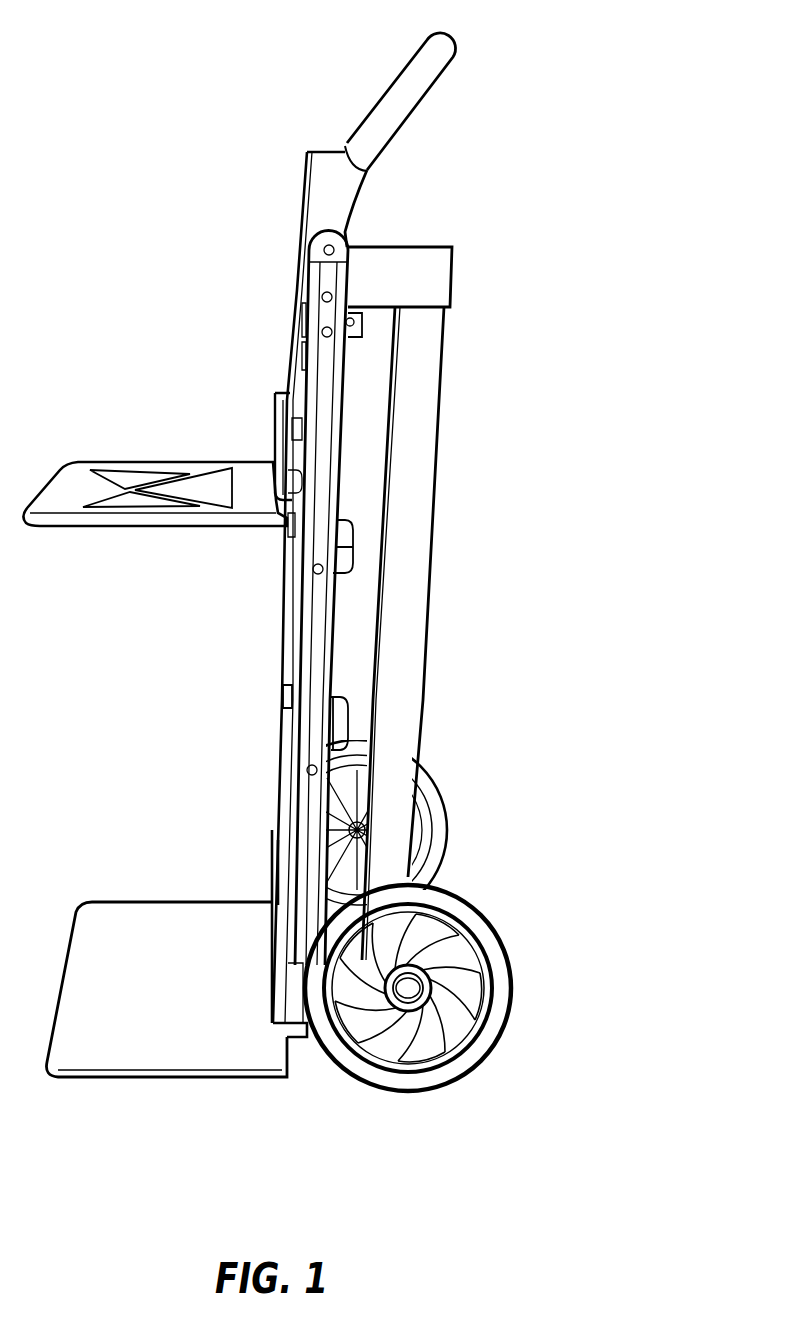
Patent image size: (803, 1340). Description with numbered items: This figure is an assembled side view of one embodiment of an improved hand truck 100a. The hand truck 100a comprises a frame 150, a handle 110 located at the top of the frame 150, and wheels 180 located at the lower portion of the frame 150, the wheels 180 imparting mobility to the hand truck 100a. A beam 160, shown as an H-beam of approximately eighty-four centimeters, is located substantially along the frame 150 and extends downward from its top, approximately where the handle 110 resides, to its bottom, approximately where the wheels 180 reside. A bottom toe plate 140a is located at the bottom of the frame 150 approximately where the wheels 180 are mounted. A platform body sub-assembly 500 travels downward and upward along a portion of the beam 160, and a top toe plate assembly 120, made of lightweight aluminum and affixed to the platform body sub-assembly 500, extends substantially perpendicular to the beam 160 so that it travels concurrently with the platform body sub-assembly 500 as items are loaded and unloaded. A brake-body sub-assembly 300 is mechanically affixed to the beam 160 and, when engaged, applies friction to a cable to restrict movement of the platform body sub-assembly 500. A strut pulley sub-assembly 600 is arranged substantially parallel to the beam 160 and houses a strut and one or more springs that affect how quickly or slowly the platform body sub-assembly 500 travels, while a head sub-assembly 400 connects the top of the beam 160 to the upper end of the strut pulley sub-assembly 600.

The hand truck 100a is at (569, 98).
The handle 110 is at (393, 88).
The top toe plate assembly 120 is at (135, 460).
The bottom toe plate 140a is at (139, 895).
The frame 150 is at (306, 260).
The beam 160 is at (276, 664).
The wheels 180 is at (477, 897).
The brake-body sub-assembly 300 is at (357, 338).
The head sub-assembly 400 is at (404, 243).
The platform body sub-assembly 500 is at (289, 391).
The strut pulley sub-assembly 600 is at (434, 572).